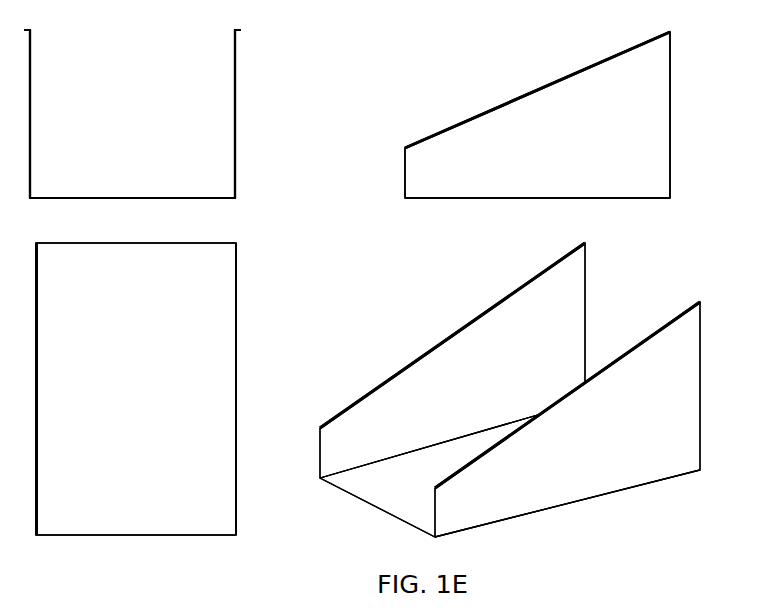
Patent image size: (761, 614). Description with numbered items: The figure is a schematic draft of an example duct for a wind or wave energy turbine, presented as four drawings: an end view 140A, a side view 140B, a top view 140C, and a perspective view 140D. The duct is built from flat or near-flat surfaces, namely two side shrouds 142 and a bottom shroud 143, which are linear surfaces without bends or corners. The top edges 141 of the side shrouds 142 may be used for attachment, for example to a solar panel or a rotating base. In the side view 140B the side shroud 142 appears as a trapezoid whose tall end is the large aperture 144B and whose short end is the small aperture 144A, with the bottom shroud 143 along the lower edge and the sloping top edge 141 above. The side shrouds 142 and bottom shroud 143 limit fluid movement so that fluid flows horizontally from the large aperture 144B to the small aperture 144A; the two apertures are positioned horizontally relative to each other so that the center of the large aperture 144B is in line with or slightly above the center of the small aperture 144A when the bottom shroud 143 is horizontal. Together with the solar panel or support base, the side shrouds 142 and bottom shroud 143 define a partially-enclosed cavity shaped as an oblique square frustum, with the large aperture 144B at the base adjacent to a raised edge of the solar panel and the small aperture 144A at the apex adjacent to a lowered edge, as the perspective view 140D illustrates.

The end view 140A is at (267, 78).
The side view 140B is at (490, 65).
The top view 140C is at (268, 272).
The perspective view 140D is at (388, 343).
The top edges 141 is at (226, 37).
The side shrouds 142 is at (230, 127).
The bottom shroud 143 is at (93, 282).
The small aperture 144A is at (403, 172).
The large aperture 144B is at (673, 117).